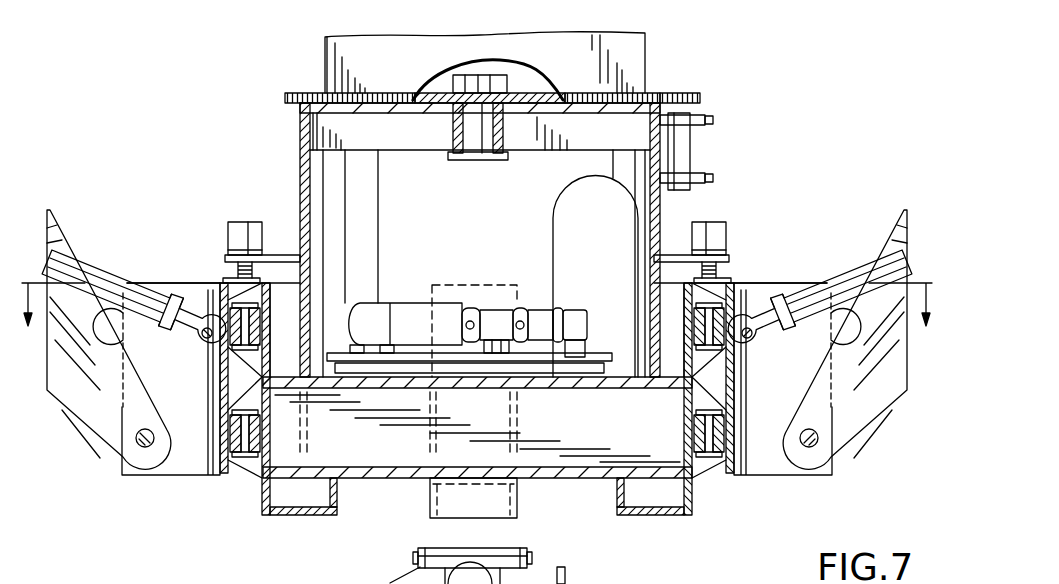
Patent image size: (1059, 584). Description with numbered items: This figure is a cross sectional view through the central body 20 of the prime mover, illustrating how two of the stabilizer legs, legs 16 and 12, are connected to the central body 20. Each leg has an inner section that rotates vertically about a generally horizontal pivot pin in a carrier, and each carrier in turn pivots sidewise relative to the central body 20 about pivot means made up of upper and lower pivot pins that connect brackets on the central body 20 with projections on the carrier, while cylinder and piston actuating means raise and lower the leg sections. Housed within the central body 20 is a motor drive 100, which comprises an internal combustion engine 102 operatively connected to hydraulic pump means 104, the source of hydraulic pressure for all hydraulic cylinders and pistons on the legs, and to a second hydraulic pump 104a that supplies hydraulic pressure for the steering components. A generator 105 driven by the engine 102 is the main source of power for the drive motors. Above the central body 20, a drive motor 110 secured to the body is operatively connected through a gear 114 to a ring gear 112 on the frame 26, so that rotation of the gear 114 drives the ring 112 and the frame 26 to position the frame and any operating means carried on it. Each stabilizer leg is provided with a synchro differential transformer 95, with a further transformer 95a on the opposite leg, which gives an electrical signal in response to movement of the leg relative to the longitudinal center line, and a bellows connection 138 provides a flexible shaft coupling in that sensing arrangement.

The leg 12 is at (850, 420).
The leg 16 is at (110, 412).
The central body 20 is at (665, 205).
The frame 26 is at (583, 64).
The synchro differential transformer 95 is at (250, 222).
The adjustment screw 95a is at (720, 225).
The motor drive 100 is at (493, 257).
The internal combustion engine 102 is at (408, 313).
The hydraulic pump means 104 is at (542, 308).
The hydraulic pump 104a is at (577, 308).
The generator 105 is at (490, 315).
The drive motor 110 is at (700, 148).
The ring gear 112 is at (652, 100).
The gear 114 is at (688, 97).
The bellows connection 138 is at (733, 288).